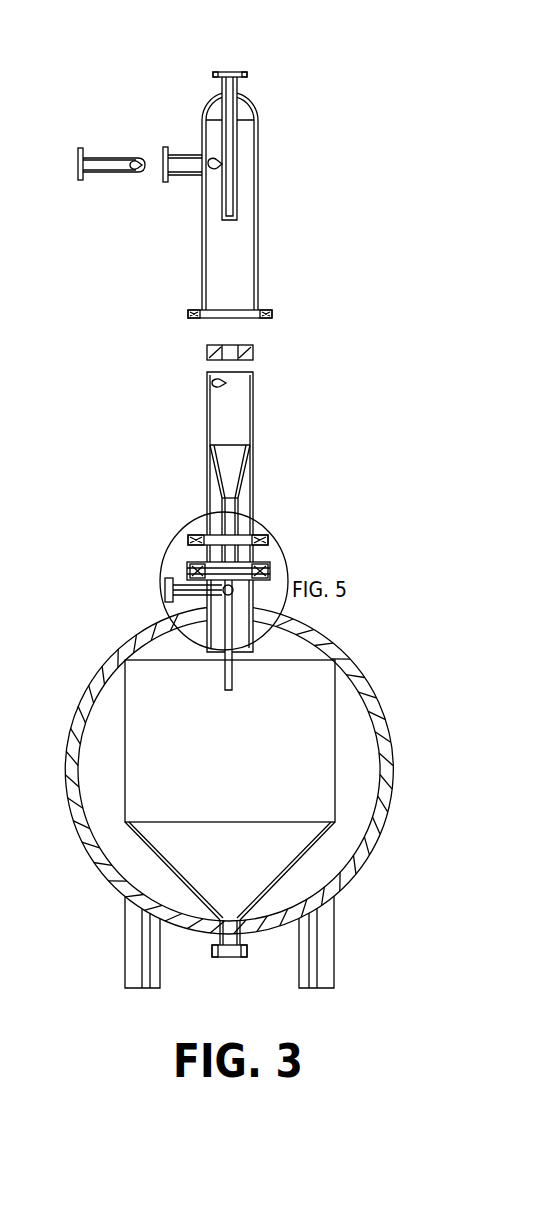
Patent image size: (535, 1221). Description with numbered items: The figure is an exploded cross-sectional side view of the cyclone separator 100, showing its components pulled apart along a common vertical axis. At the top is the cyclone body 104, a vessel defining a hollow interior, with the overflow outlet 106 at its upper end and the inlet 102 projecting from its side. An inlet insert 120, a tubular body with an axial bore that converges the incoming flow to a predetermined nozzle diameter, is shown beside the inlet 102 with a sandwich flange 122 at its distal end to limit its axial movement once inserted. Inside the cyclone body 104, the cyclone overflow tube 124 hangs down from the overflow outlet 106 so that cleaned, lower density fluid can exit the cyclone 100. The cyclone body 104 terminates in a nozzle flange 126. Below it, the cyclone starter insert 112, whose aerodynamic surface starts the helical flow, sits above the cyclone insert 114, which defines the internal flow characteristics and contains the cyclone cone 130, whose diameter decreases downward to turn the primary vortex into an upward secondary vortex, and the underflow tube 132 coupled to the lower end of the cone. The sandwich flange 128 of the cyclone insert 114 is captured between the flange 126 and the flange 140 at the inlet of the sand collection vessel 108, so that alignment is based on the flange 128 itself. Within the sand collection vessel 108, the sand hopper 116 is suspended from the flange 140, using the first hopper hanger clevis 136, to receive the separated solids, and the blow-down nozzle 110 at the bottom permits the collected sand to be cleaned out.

The cyclone separator 100 is at (349, 64).
The inlet 102 is at (166, 147).
The cyclone body 104 is at (258, 213).
The overflow outlet 106 is at (244, 72).
The sand collection vessel 108 is at (385, 710).
The blow-down nozzle 110 is at (230, 957).
The cyclone starter insert 112 is at (253, 353).
The cyclone insert 114 is at (253, 420).
The sand hopper 116 is at (337, 793).
The inlet insert 120 is at (112, 173).
The flange 122 is at (78, 153).
The cyclone overflow tube 124 is at (237, 190).
The flange 126 is at (263, 311).
The flange 128 is at (265, 535).
The cyclone cone 130 is at (210, 484).
The underflow tube 132 is at (222, 510).
The first hopper hanger clevis 136 is at (227, 680).
The flange 140 is at (270, 568).